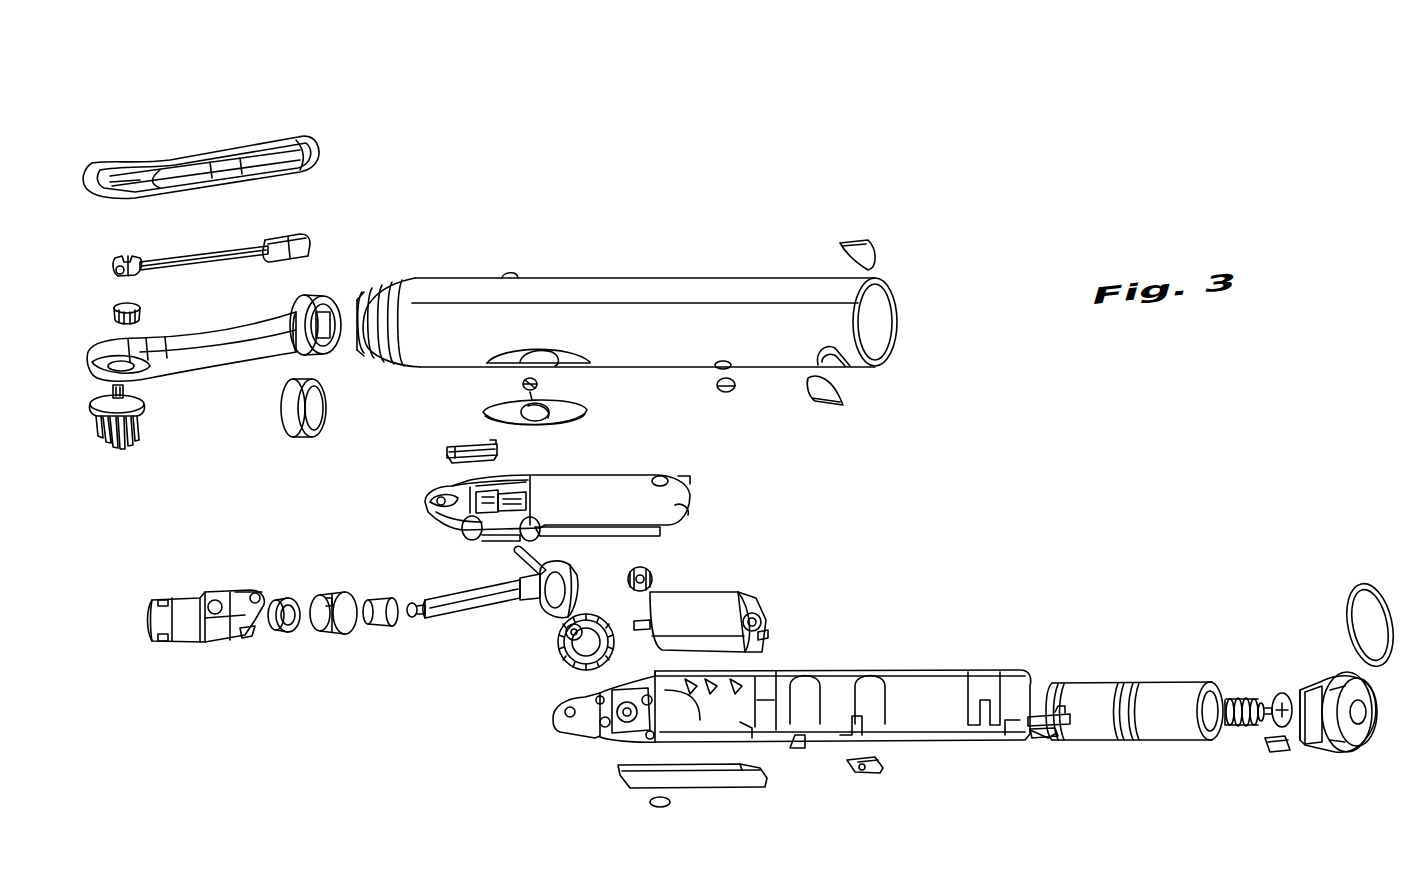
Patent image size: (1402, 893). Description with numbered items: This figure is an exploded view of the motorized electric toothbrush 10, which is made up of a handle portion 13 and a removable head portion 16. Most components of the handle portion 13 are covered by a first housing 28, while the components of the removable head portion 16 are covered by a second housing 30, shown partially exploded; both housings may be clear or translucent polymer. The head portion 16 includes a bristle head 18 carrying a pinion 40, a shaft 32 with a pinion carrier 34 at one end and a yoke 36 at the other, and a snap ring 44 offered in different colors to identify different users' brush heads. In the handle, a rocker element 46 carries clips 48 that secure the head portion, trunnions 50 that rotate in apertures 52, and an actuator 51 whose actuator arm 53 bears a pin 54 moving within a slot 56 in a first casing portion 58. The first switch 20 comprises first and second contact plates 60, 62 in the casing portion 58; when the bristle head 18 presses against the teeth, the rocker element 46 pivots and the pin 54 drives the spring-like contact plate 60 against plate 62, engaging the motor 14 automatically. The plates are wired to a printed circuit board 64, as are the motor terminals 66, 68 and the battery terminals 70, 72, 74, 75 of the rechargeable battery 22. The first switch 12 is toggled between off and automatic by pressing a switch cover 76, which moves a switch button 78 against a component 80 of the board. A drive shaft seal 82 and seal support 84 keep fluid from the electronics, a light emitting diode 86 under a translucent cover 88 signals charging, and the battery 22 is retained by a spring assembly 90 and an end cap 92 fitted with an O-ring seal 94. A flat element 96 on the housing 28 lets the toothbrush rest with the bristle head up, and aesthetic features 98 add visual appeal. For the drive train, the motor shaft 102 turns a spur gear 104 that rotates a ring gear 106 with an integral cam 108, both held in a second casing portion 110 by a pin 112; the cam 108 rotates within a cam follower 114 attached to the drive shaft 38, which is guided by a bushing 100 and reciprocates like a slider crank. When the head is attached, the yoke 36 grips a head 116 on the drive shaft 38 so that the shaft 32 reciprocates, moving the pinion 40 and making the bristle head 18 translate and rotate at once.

The motorized electric toothbrush 10 is at (675, 180).
The first switch 12 is at (600, 394).
The handle portion 13 is at (747, 216).
The motor 14 is at (710, 592).
The removable head portion 16 is at (158, 128).
The bristle head 18 is at (145, 415).
The first switch 20 is at (428, 425).
The battery 22 is at (1165, 683).
The first housing 28 is at (585, 278).
The second housing 30 is at (268, 150).
The shaft 32 is at (198, 265).
The pinion carrier 34 is at (122, 262).
The yoke 36 is at (298, 238).
The drive shaft 38 is at (465, 615).
The pinion 40 is at (115, 310).
The snap ring 44 is at (300, 435).
The rocker element 46 is at (195, 642).
The clips 48 is at (165, 600).
The trunnions 50 is at (214, 600).
The actuator 51 is at (248, 590).
The apertures 52 is at (440, 505).
The actuator arm 53 is at (250, 640).
The pin 54 is at (255, 592).
The slot 56 is at (500, 488).
The first casing portion 58 is at (645, 474).
The first contact plate 60 is at (470, 446).
The second contact plate 62 is at (447, 455).
The printed circuit board 64 is at (720, 788).
The motor terminal 66 is at (752, 610).
The motor terminal 68 is at (765, 632).
The battery terminal 70 is at (1037, 715).
The battery terminal 72 is at (1043, 740).
The battery terminal 74 is at (1270, 752).
The battery terminal 75 is at (1283, 692).
The switch cover 76 is at (575, 422).
The switch button 78 is at (540, 384).
The component 80 is at (655, 808).
The drive shaft seal 82 is at (288, 632).
The seal support 84 is at (340, 635).
The light emitting diode 86 is at (870, 775).
The translucent cover 88 is at (728, 395).
The spring assembly 90 is at (1252, 688).
The end cap 92 is at (1335, 762).
The O-ring seal 94 is at (1350, 612).
The flat element 96 is at (515, 272).
The aesthetic features 98 is at (858, 240).
The bushing 100 is at (378, 600).
The motor shaft 102 is at (640, 631).
The spur gear 104 is at (645, 567).
The ring gear 106 is at (566, 652).
The cam 108 is at (596, 616).
The second casing portion 110 is at (915, 668).
The pin 112 is at (520, 553).
The cam follower 114 is at (552, 615).
The head 116 is at (412, 618).